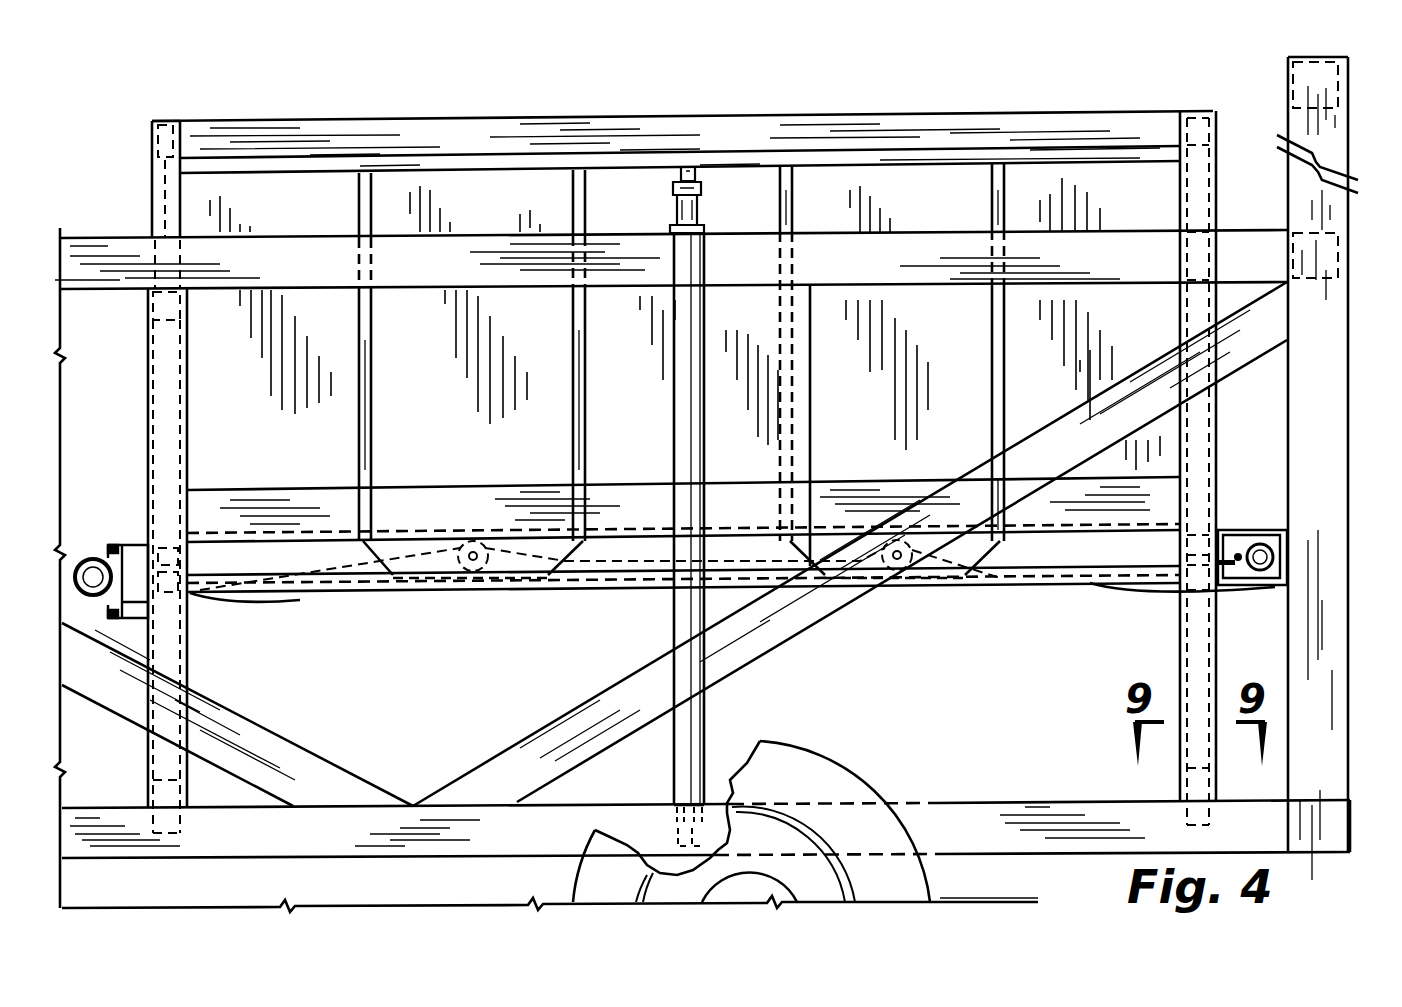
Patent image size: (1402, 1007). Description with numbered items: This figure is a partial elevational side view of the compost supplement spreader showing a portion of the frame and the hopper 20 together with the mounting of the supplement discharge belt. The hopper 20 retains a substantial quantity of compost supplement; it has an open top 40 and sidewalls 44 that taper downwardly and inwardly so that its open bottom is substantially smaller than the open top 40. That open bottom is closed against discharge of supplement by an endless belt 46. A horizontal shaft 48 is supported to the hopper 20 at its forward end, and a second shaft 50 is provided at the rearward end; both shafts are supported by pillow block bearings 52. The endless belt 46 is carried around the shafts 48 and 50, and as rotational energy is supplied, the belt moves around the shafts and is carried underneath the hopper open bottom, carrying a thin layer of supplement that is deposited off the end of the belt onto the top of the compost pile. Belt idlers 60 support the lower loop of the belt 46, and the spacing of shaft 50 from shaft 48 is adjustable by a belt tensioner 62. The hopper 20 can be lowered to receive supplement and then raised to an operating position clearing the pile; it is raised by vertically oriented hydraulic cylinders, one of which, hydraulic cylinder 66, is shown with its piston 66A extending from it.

The hopper 20 is at (752, 100).
The open top 40 is at (955, 100).
The sidewalls 44 is at (868, 404).
The endless belt 46 is at (215, 600).
The horizontal shaft 48 is at (91, 560).
The second shaft 50 is at (1290, 556).
The pillow block bearings 52 is at (115, 560).
The belt idlers 60 is at (474, 572).
The belt tensioner 62 is at (1238, 550).
The hydraulic cylinder 66 is at (674, 416).
The piston 66A is at (687, 207).